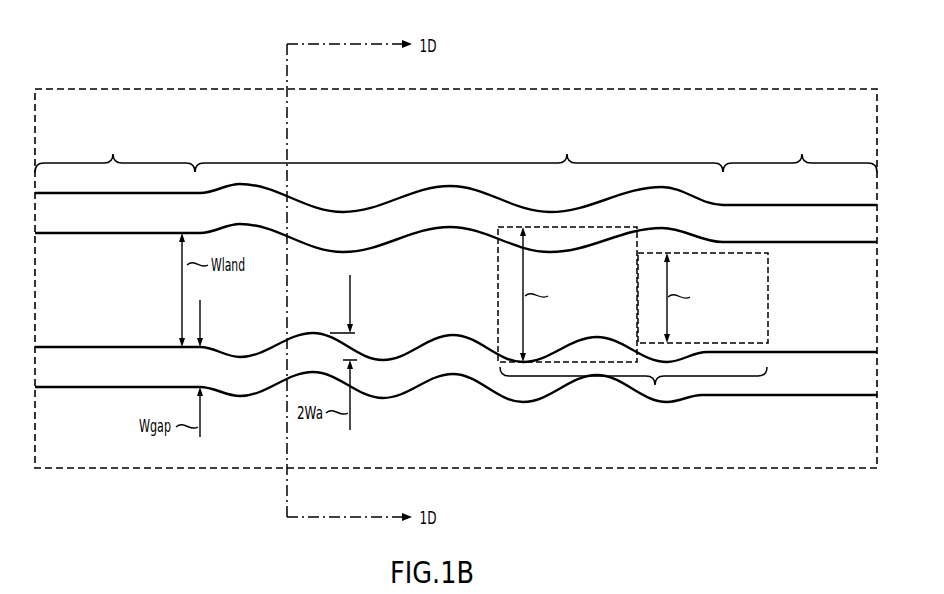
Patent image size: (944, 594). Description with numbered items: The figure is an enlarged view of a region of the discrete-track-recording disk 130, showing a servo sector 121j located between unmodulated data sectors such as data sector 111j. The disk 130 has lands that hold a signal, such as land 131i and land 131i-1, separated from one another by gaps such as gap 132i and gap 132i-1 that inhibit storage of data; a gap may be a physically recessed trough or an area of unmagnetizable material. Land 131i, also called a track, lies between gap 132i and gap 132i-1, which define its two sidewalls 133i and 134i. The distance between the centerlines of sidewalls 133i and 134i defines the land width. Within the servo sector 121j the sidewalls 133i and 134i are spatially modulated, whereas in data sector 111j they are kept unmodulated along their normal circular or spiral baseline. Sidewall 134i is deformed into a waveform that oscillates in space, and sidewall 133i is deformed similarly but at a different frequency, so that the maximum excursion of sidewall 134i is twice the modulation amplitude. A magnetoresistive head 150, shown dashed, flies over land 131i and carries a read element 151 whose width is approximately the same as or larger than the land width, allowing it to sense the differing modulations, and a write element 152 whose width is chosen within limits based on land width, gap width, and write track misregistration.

The disk 130 is at (79, 77).
The data sector 111j is at (800, 149).
The servo sector 121j is at (459, 149).
The land 131i is at (233, 320).
The land 131i-1 is at (228, 442).
The gap 132i is at (841, 213).
The gap 132i-1 is at (837, 383).
The sidewall 133i is at (52, 232).
The sidewall 134i is at (47, 348).
The head 150 is at (655, 385).
The read element 151 is at (535, 227).
The write element 152 is at (675, 253).